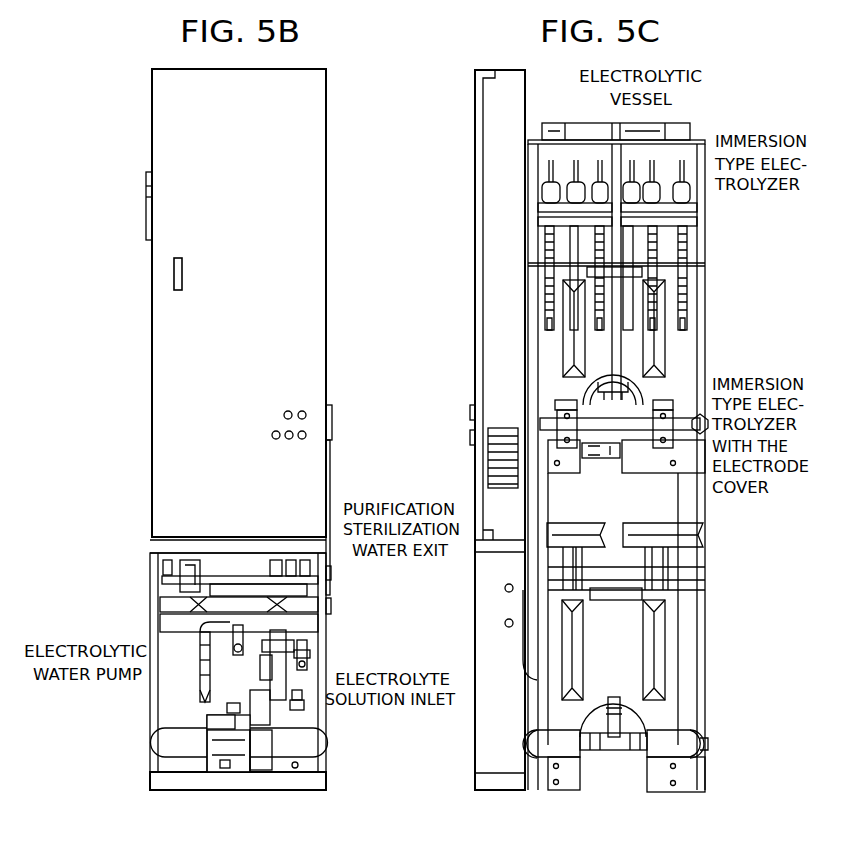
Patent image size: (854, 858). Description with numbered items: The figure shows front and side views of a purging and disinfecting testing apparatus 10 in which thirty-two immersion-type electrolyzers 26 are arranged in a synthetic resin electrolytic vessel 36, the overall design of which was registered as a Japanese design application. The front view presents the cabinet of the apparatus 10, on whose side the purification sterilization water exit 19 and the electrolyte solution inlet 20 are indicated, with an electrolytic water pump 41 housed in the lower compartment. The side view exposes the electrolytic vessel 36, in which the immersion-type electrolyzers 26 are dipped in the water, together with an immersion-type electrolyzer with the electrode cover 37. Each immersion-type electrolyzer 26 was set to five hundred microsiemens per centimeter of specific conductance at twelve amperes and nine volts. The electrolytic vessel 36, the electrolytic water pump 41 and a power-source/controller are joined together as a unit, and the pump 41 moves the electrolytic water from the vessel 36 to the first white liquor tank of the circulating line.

In FIG. 5B, the electrolytic water generating apparatus 10 is at (525, 69).
In FIG. 5B, the purification sterilization water exit 19 is at (333, 573).
In FIG. 5B, the electrolyte solution inlet 20 is at (341, 603).
In FIG. 5B, the electrolytic water pump 41 is at (165, 738).
In FIG. 5C, the electrolytic vessel 36 is at (701, 134).
In FIG. 5C, the immersion-type electrolyzer 26 is at (683, 246).
In FIG. 5C, the immersion type electrolyzer with the electrode cover 37 is at (630, 292).